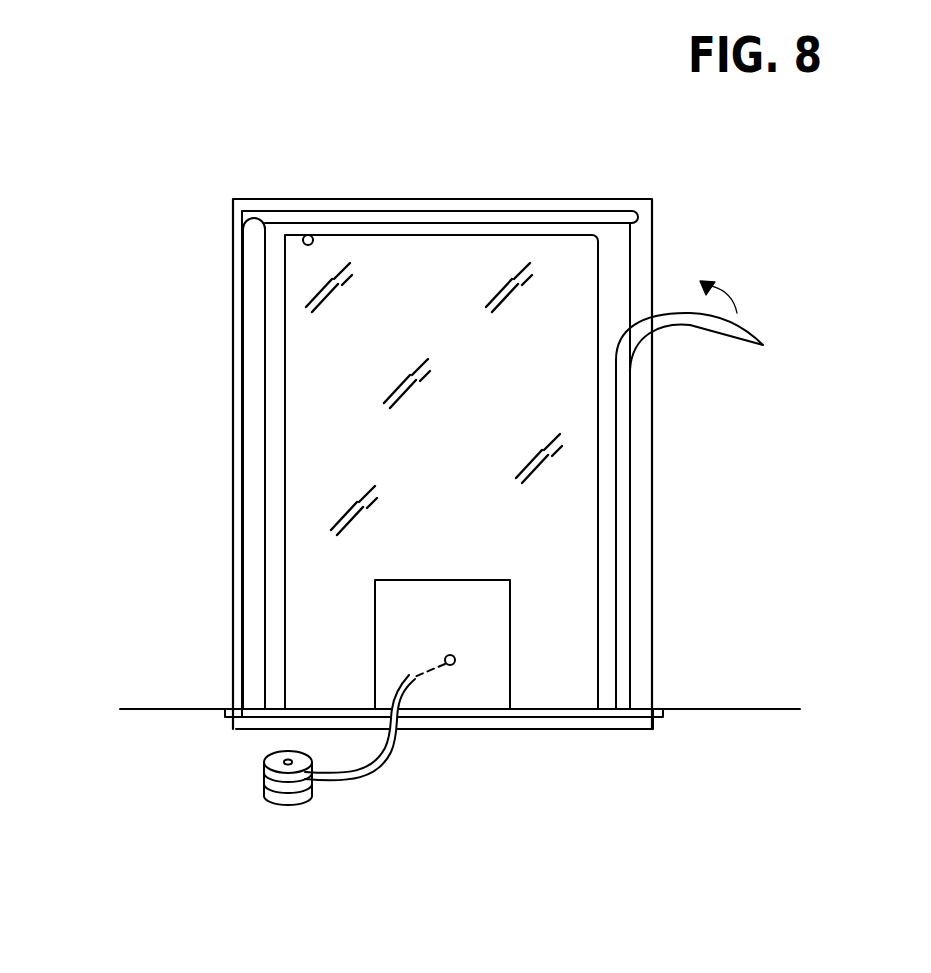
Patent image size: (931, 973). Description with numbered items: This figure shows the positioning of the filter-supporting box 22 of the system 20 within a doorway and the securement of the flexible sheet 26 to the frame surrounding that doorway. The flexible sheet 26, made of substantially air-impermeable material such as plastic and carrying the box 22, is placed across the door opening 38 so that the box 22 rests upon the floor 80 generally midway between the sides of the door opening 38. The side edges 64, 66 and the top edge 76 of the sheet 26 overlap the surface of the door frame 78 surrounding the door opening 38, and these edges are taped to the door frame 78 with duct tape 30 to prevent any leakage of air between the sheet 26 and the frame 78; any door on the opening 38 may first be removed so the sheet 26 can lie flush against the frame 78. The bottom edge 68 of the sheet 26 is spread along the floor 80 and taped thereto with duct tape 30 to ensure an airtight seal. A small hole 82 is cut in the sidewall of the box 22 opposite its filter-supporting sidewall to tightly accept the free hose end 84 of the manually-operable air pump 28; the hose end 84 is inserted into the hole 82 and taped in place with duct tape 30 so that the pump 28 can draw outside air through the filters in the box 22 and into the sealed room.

The system 20 is at (135, 598).
The box 22 is at (475, 578).
The flexible sheet 26 is at (578, 462).
The air pump 28 is at (265, 790).
The duct tape 30 is at (616, 205).
The door opening 38 is at (308, 235).
The side edge 64 is at (240, 442).
The side edge 66 is at (630, 278).
The bottom edge 68 is at (648, 728).
The top edge 76 is at (420, 211).
The door frame 78 is at (528, 199).
The floor 80 is at (713, 707).
The hole 82 is at (455, 657).
The free hose end 84 is at (397, 682).